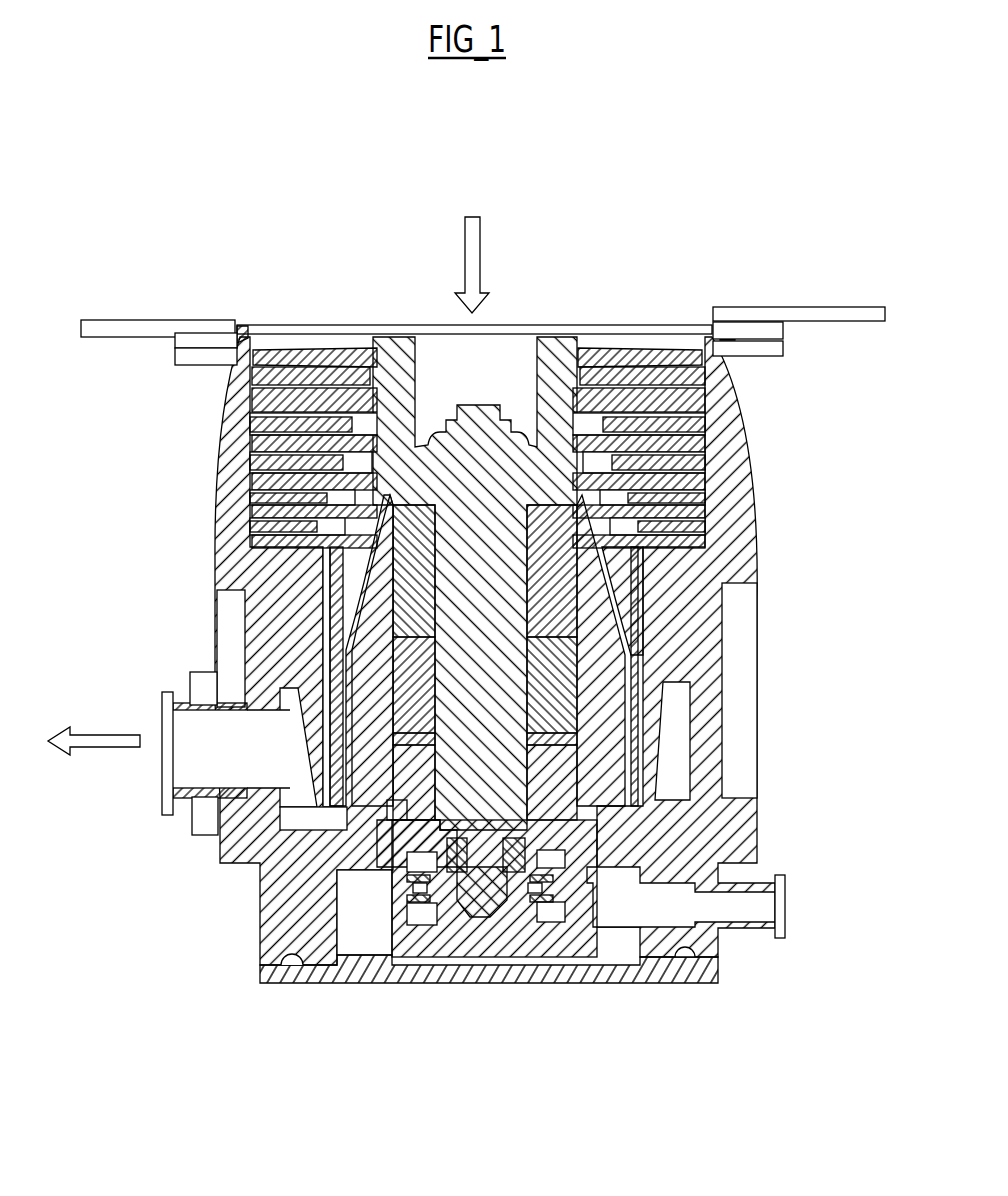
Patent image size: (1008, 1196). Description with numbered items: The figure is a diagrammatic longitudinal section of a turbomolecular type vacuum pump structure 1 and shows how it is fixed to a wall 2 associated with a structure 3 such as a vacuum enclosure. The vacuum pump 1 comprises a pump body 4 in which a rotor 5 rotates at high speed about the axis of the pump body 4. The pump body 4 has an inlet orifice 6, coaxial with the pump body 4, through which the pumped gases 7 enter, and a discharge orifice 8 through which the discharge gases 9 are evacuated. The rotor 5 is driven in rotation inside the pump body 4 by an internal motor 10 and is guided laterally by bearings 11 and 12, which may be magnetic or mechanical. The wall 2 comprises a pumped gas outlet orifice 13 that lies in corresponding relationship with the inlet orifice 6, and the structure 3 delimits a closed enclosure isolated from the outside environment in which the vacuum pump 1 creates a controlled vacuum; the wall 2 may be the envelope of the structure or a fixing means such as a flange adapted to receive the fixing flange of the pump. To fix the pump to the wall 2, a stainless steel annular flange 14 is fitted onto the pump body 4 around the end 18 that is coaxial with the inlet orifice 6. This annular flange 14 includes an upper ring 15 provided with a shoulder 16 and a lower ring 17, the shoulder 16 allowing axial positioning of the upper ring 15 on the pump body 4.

The vacuum pump structure 1 is at (227, 921).
The wall 2 is at (187, 320).
The structure 3 is at (88, 316).
The pump body 4 is at (235, 572).
The rotor 5 is at (550, 344).
The inlet orifice 6 is at (362, 332).
The pumped gases 7 is at (482, 238).
The discharge orifice 8 is at (182, 764).
The discharge gases 9 is at (117, 740).
The internal motor 10 is at (560, 667).
The bearing 11 is at (580, 550).
The bearing 12 is at (583, 916).
The pumped gas outlet orifice 13 is at (238, 320).
The annular flange 14 is at (165, 351).
The upper ring 15 is at (762, 332).
The shoulder 16 is at (730, 325).
The lower ring 17 is at (735, 348).
The end 18 is at (735, 335).